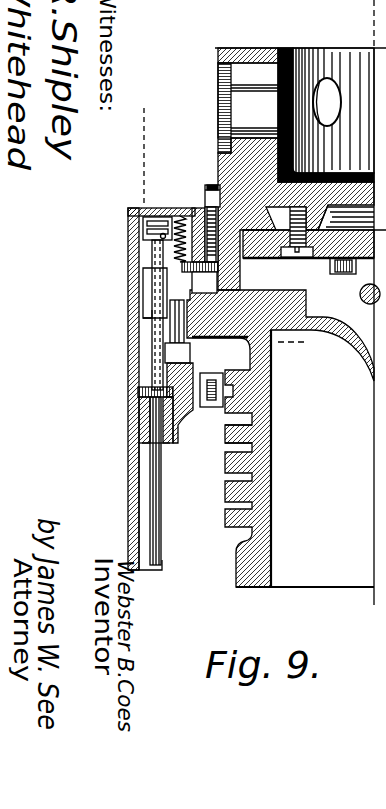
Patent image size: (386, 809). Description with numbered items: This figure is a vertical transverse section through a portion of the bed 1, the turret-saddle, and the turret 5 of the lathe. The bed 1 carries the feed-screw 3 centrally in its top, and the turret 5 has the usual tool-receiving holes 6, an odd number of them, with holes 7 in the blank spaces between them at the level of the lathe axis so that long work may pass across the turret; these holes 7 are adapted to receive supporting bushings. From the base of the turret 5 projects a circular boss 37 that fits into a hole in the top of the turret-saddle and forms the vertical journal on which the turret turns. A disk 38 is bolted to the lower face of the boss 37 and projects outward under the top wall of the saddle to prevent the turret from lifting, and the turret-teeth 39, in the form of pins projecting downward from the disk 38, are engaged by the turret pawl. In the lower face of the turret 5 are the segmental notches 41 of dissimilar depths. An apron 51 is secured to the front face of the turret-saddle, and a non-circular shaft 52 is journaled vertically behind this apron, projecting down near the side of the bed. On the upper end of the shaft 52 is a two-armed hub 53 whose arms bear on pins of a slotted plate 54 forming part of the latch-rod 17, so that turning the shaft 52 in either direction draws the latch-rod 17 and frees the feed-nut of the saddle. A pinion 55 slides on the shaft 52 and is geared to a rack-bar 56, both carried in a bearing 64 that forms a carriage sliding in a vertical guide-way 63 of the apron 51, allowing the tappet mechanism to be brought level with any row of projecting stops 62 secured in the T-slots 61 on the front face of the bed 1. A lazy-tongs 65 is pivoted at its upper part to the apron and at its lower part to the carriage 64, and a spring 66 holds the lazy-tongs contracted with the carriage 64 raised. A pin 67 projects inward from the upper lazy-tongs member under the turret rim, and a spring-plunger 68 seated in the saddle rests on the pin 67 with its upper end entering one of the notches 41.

The bed 1 is at (260, 512).
The feed-screw 3 is at (360, 297).
The turret 5 is at (265, 58).
The tool-receiving holes 6 is at (237, 106).
The holes in blank spaces 7 is at (339, 112).
The latch-rod 17 is at (157, 241).
The circular boss 37 is at (310, 230).
The disk 38 is at (325, 245).
The turret-teeth 39 is at (342, 272).
The segmental notches 41 is at (210, 192).
The apron 51 is at (130, 475).
The non-circular shaft 52 is at (157, 507).
The two-armed hub 53 is at (156, 232).
The slotted plate 54 is at (159, 237).
The pinion 55 is at (138, 399).
The rack-bar 56 is at (169, 400).
The T-slots 61 is at (246, 424).
The projecting stops 62 is at (210, 410).
The vertical guide-way 63 is at (142, 513).
The bearing 64 is at (143, 418).
The lazy-tongs 65 is at (172, 298).
The spring 66 is at (178, 250).
The pin 67 is at (200, 277).
The spring-plunger 68 is at (207, 196).